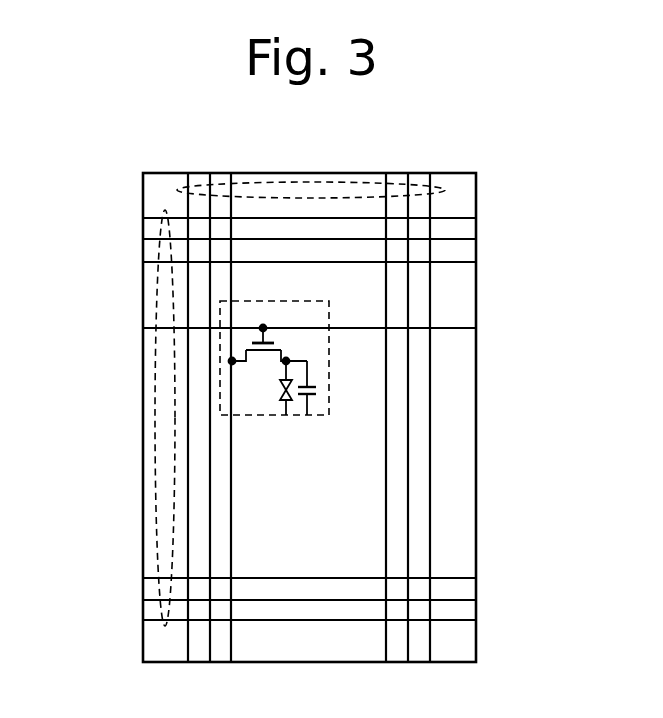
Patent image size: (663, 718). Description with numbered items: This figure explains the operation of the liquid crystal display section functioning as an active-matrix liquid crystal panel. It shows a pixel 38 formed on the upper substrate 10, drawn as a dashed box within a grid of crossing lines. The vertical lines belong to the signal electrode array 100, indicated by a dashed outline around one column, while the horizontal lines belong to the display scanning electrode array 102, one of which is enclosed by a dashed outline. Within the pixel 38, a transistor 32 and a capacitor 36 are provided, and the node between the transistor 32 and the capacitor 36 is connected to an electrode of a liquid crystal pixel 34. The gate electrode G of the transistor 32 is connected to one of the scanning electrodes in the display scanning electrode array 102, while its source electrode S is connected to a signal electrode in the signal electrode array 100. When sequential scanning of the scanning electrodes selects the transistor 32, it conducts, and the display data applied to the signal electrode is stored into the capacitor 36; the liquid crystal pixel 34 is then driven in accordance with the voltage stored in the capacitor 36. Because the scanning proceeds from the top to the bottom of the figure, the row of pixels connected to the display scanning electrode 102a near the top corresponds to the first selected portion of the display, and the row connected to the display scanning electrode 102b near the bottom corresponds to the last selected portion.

The upper substrate 10 is at (476, 198).
The signal electrode array 100 is at (292, 178).
The display scanning electrode array 102 is at (155, 408).
The display scanning electrode 102a is at (450, 220).
The display scanning electrode 102b is at (453, 620).
The pixel 38 is at (292, 299).
The transistor 32 is at (263, 357).
The liquid crystal pixel 34 is at (292, 398).
The capacitor 36 is at (317, 388).